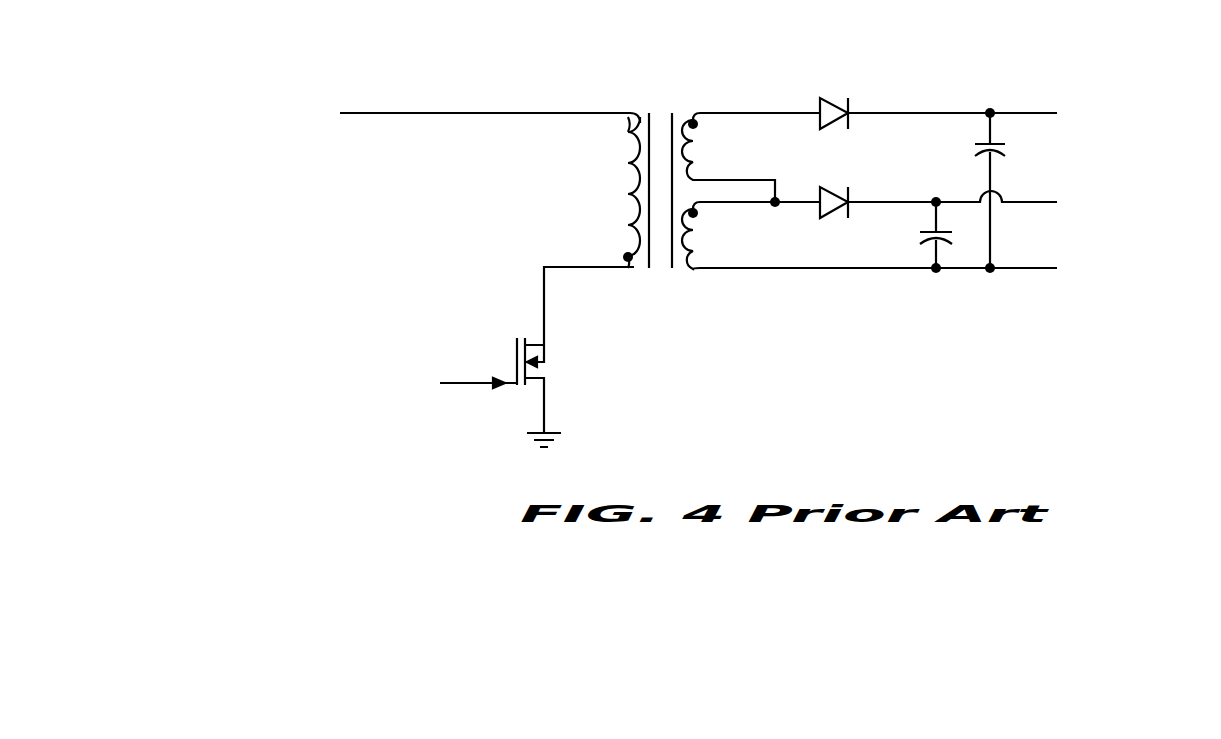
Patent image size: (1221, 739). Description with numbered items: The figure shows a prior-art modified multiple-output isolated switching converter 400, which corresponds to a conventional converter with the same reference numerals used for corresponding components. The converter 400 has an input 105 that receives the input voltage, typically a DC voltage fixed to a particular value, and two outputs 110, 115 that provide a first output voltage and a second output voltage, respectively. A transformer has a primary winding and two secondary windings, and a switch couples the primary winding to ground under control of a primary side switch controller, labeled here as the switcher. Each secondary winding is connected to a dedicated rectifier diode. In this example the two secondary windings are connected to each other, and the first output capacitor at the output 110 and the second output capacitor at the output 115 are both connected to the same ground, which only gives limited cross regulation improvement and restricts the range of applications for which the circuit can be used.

The input 105 is at (340, 113).
The output 110 is at (1020, 202).
The output 115 is at (993, 111).
The isolated switching converter 400 is at (316, 451).